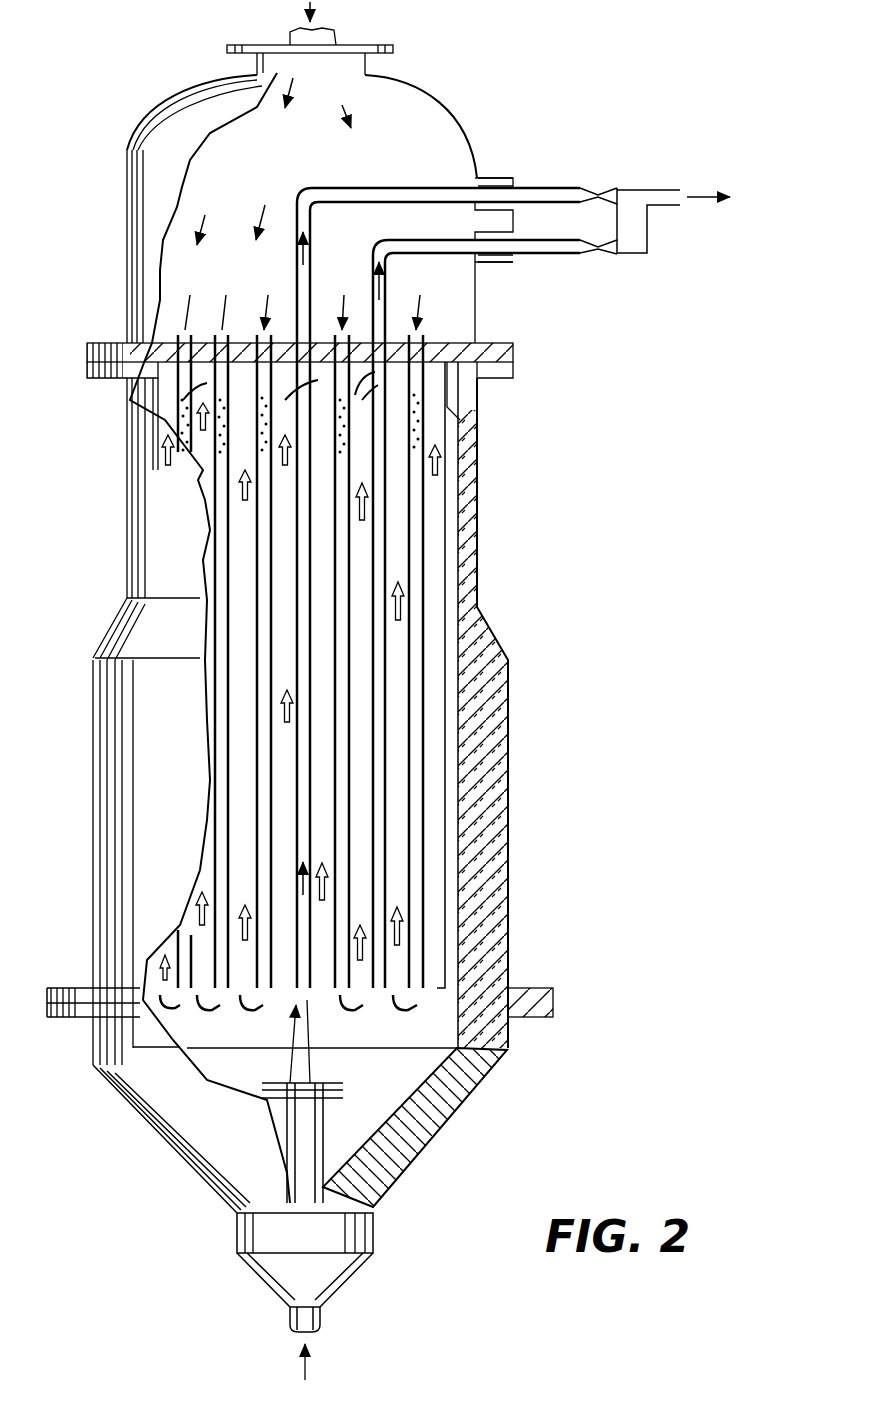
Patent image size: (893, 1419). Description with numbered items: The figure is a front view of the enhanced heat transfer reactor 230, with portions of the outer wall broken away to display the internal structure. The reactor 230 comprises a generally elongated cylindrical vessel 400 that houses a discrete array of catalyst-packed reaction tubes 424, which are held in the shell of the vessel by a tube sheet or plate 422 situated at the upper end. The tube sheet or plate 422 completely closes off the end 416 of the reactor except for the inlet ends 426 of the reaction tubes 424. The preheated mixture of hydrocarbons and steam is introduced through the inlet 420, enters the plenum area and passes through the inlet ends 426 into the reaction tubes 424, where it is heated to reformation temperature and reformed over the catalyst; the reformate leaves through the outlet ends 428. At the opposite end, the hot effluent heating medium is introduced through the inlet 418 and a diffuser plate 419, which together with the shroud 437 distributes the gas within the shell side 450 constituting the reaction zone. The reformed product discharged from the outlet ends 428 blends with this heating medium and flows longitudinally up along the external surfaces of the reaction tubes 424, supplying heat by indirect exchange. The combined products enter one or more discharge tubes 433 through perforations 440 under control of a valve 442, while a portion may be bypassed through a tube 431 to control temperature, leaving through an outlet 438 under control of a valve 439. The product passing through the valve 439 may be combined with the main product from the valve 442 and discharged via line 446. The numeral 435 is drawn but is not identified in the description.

The reactor 230 is at (514, 810).
The cylindrical vessel 400 is at (488, 545).
The end of the reactor 416 is at (417, 92).
The inlet 418 is at (312, 1365).
The diffuser plate 419 is at (338, 1084).
The inlet 420 is at (337, 34).
The tube sheet or plate 422 is at (500, 343).
The reaction tubes 424 is at (418, 500).
The inlet ends 426 is at (423, 332).
The outlet ends 428 is at (420, 1003).
The bypass tube 431 is at (425, 188).
The discharge tubes 433 is at (434, 240).
The reaction tube 435 is at (344, 629).
The shroud 437 is at (465, 598).
The outlet 438 is at (508, 180).
The valve 439 is at (585, 194).
The perforations 440 is at (515, 260).
The valve 442 is at (590, 255).
The line 446 is at (660, 190).
The shell side 450 is at (240, 522).